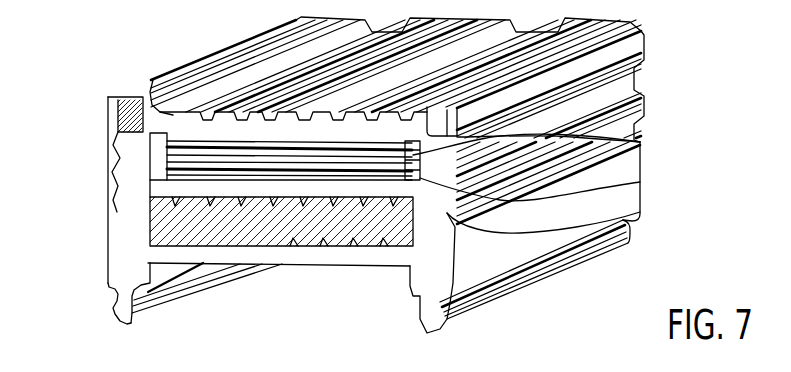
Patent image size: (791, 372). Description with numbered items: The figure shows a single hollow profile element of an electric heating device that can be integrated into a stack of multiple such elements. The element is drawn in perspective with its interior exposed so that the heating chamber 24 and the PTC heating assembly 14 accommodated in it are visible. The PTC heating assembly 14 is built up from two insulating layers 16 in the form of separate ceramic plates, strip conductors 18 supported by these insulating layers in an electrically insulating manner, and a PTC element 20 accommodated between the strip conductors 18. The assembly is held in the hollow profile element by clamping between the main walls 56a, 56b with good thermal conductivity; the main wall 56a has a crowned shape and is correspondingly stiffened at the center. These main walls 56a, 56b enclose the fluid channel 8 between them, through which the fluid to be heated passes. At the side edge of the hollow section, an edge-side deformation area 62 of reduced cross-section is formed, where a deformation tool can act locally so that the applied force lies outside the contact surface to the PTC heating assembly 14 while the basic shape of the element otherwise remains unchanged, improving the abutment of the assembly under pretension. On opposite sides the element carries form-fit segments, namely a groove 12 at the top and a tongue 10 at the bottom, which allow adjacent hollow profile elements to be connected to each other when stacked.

The fluid channel 8 is at (156, 219).
The tongue 10 is at (118, 303).
The groove 12 is at (130, 100).
The PTC heating assembly 14 is at (145, 164).
The insulating layers 16 is at (490, 137).
The strip conductors 18 is at (428, 210).
The PTC element 20 is at (413, 162).
The heating chamber 24 is at (138, 182).
The main wall 56a is at (197, 136).
The main wall 56b is at (197, 190).
The deformation area 62 is at (173, 116).